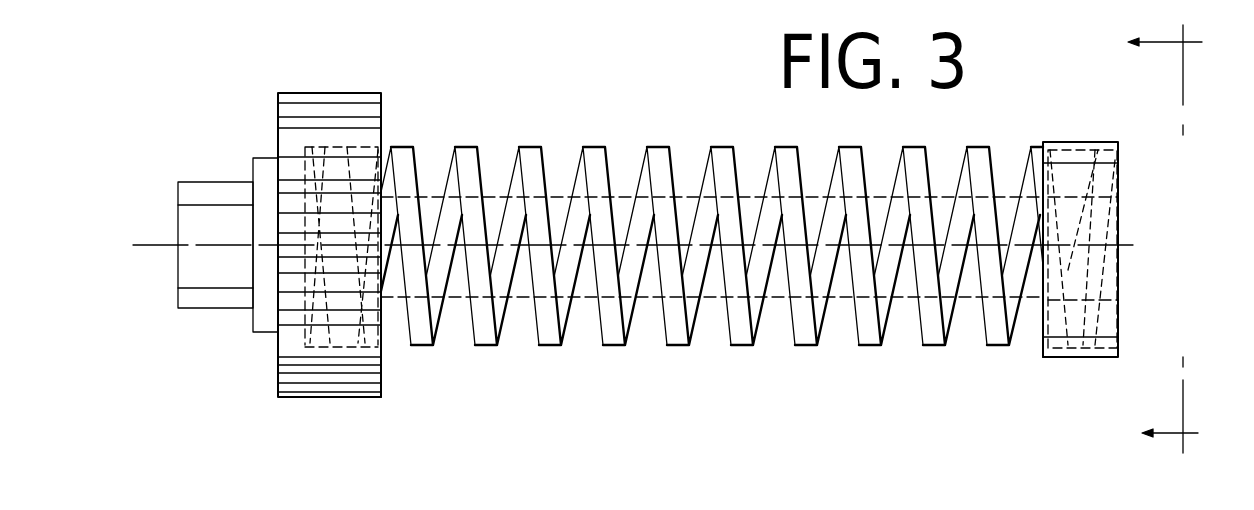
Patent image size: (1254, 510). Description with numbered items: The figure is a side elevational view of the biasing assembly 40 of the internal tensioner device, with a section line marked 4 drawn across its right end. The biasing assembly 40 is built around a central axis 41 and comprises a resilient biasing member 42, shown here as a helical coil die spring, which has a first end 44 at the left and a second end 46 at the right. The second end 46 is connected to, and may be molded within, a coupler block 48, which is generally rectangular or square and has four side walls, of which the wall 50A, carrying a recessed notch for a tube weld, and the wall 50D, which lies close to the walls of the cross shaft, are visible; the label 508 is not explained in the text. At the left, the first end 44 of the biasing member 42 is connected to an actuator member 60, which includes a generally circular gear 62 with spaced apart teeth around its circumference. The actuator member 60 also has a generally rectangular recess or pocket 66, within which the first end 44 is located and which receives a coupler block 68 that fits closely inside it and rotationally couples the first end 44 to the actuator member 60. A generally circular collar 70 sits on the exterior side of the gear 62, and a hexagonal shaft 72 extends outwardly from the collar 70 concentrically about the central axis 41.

The biasing assembly 40 is at (617, 97).
The central axis 41 is at (1135, 247).
The resilient biasing member 42 is at (793, 350).
The first end 44 is at (283, 338).
The second end 46 is at (1112, 186).
The coupler block 48 is at (1036, 332).
The side wall 50A is at (1108, 322).
The side wall 50D is at (1083, 358).
The upper flange 508 is at (1082, 142).
The actuator member 60 is at (308, 400).
The gear 62 is at (342, 92).
The pocket 66 is at (380, 151).
The coupler block 68 is at (385, 336).
The collar 70 is at (267, 157).
The hexagonal shaft 72 is at (207, 181).
The section line 4- 4 is at (1167, 238).